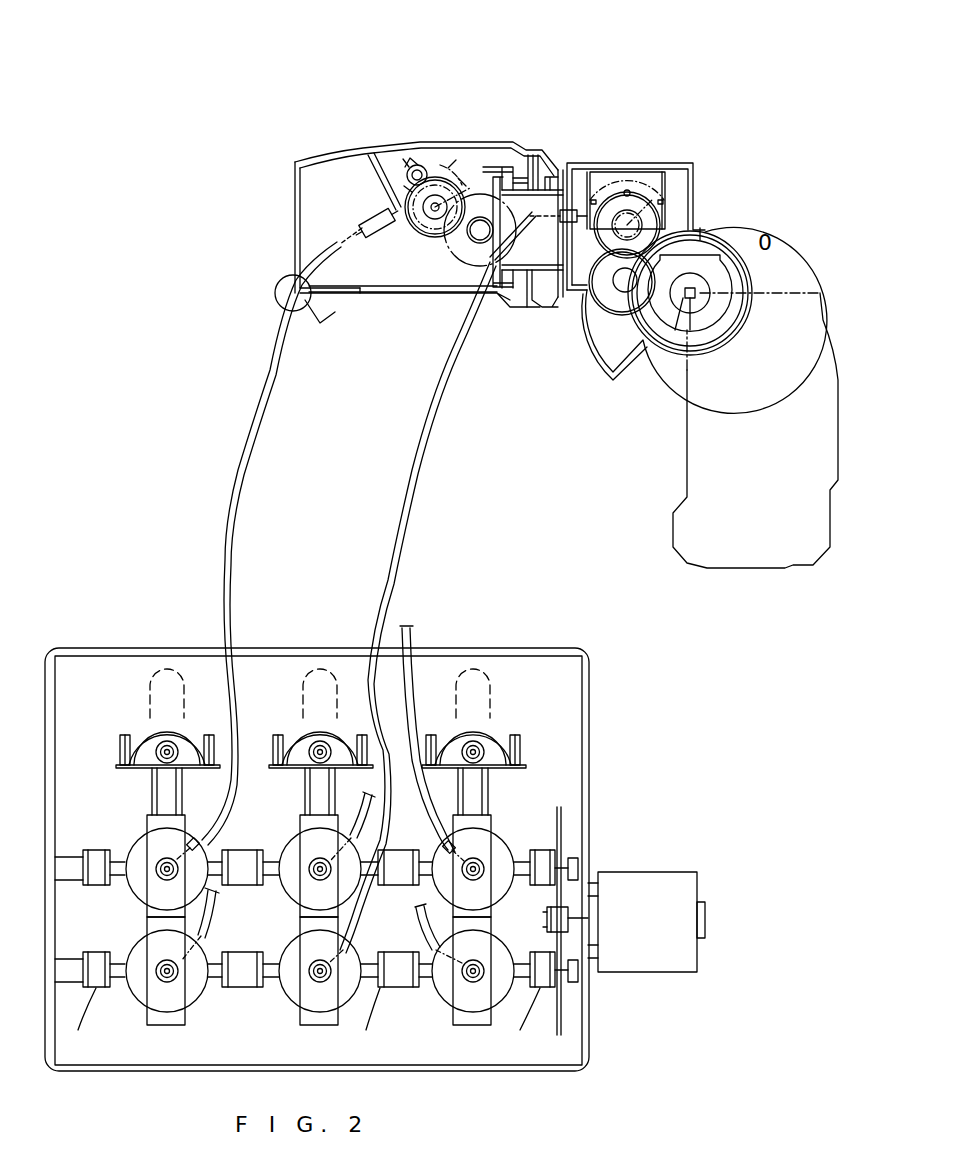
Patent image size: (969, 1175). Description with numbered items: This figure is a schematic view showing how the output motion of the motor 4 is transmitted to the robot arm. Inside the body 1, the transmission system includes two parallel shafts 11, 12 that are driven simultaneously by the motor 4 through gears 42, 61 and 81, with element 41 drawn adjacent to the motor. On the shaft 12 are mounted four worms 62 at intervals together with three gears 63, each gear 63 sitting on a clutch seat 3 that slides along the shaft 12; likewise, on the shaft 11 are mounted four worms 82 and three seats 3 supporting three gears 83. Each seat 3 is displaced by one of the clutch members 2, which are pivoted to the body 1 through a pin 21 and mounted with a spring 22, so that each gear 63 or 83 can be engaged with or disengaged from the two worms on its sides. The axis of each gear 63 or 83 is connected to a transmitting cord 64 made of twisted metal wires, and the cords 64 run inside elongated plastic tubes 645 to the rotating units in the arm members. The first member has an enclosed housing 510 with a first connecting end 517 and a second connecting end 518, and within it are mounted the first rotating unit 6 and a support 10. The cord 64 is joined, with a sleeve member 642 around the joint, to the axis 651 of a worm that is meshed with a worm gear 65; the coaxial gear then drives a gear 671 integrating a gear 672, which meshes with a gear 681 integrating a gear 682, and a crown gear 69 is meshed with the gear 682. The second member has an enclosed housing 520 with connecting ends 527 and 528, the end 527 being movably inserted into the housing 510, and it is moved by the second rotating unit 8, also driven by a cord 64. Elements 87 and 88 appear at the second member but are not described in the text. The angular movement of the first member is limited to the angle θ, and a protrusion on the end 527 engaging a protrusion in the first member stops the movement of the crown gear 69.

The body 1 is at (280, 638).
The clutch member 2 is at (165, 675).
The clutch seat 3 is at (150, 1013).
The motor 4 is at (625, 962).
The first rotating unit 6 is at (398, 100).
The second rotating unit 8 is at (608, 60).
The support 10 is at (434, 178).
The shaft 11 is at (128, 968).
The shaft 12 is at (120, 858).
The pin 21 is at (165, 752).
The spring 22 is at (132, 768).
The motor bracket 41 is at (592, 888).
The gear 42 is at (545, 918).
The gear 61 is at (557, 812).
The worm 62 is at (245, 850).
The gear 63 is at (212, 900).
The transmitting cord 64 is at (180, 852).
The worm gear 65 is at (402, 168).
The crown gear 69 is at (500, 310).
The gear 81 is at (561, 1032).
The worm 82 is at (307, 1022).
The gear 83 is at (200, 997).
The drum 87 is at (722, 340).
The shaft center 88 is at (690, 340).
The enclosed housing 510 is at (318, 158).
The first connecting end 517 is at (553, 165).
The second connecting end 518 is at (296, 200).
The enclosed housing 520 is at (640, 172).
The connecting end 527 is at (530, 295).
The connecting end 528 is at (695, 355).
The sleeve member 642 is at (366, 222).
The elongated plastic tube 645 is at (425, 388).
The axis 651 is at (458, 155).
The gear 671 is at (362, 310).
The gear 672 is at (436, 240).
The gear 681 is at (465, 265).
The gear 682 is at (478, 265).